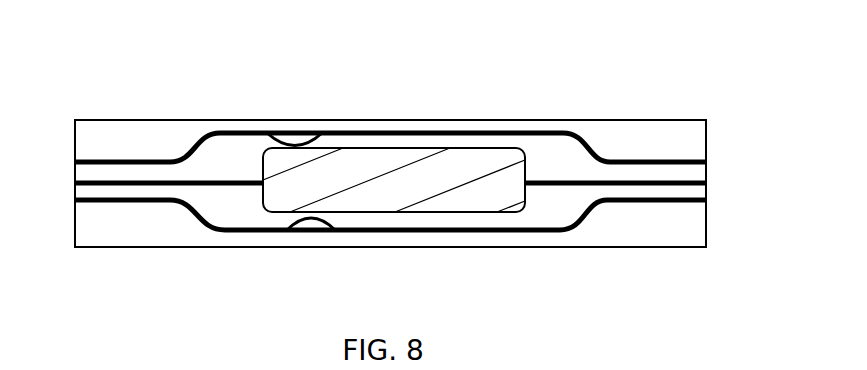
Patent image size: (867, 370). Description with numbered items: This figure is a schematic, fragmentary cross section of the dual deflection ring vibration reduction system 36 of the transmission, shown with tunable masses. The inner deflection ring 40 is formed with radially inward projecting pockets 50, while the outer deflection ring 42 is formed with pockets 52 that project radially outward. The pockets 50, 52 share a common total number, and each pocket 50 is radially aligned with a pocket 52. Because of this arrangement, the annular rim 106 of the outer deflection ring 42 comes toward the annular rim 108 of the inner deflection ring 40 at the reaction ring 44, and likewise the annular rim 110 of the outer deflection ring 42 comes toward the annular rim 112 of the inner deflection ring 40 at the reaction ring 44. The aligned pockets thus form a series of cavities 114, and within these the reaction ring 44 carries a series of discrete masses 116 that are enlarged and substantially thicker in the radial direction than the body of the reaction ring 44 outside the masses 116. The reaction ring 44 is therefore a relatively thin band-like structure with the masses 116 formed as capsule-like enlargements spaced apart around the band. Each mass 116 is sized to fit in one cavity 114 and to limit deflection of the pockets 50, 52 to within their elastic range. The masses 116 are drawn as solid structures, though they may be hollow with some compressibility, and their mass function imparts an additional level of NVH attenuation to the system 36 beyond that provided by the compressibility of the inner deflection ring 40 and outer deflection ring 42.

The dual deflection ring vibration reduction system 36 is at (472, 113).
The inner deflection ring 40 is at (222, 236).
The outer deflection ring 42 is at (537, 133).
The reaction ring 44 is at (233, 181).
The pockets 50 is at (283, 228).
The pockets 52 is at (298, 144).
The annular rim 106 is at (123, 162).
The annular rim 108 is at (118, 203).
The annular rim 110 is at (645, 162).
The annular rim 112 is at (652, 203).
The cavities 114 is at (550, 205).
The masses 116 is at (475, 197).